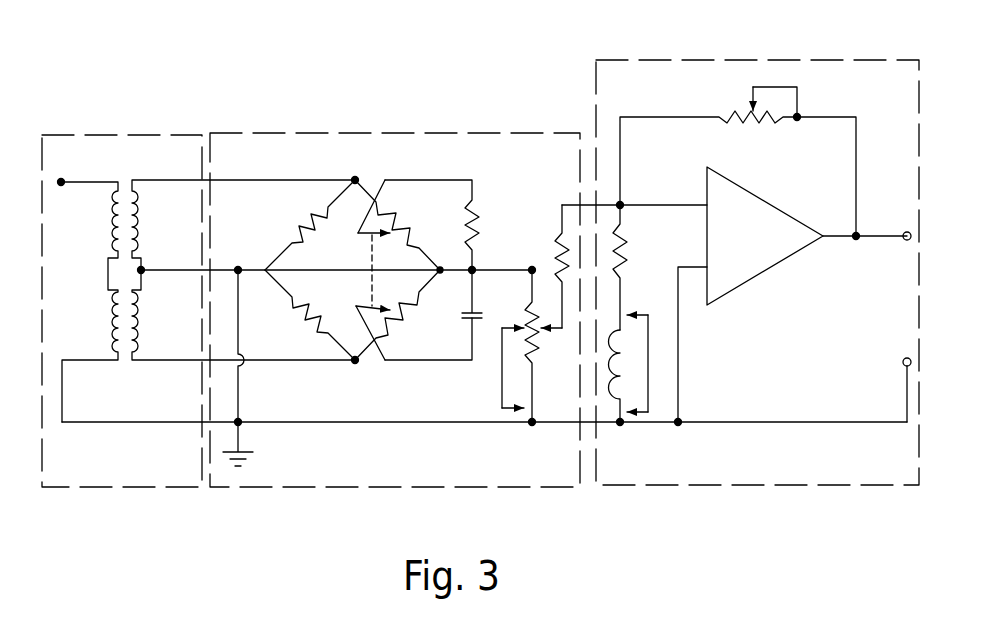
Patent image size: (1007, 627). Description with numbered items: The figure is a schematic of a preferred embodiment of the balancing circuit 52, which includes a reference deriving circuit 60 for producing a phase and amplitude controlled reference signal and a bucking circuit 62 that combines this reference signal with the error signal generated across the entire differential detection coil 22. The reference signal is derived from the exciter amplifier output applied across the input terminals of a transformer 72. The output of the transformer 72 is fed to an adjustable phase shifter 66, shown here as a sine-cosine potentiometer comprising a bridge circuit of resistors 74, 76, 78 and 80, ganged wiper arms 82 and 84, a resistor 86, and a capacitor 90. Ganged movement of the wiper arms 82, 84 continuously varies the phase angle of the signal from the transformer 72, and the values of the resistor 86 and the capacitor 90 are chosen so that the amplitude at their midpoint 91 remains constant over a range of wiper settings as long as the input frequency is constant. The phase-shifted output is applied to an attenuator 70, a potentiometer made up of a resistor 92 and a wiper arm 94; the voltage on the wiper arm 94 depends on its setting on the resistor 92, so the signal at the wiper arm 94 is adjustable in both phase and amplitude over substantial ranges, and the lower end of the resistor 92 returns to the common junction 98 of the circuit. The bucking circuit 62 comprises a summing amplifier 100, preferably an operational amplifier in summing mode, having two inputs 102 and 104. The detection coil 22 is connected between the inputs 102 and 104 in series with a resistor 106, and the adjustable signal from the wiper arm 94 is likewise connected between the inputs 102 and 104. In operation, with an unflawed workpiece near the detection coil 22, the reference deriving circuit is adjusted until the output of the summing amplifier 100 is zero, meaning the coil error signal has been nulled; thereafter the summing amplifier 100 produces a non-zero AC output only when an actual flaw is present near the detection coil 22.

The transformer 72 is at (125, 193).
The reference deriving circuit 60 is at (277, 130).
The resistor 74 is at (314, 212).
The resistor 78 is at (316, 320).
The resistor 76 is at (400, 230).
The resistor 80 is at (402, 317).
The adjustable phase shifter 66 is at (350, 239).
The ganged wiper arm 82 is at (370, 238).
The ganged wiper arm 84 is at (380, 312).
The resistor 86 is at (483, 195).
The capacitor 90 is at (466, 322).
The midpoint 91 is at (468, 273).
The resistor 92 is at (538, 353).
The attenuator 70 is at (522, 304).
The wiper arm 94 is at (553, 300).
The junction 98 is at (533, 423).
The balancing circuit 52 is at (757, 245).
The bucking circuit 62 is at (747, 58).
The input 102 is at (638, 205).
The resistor 106 is at (627, 247).
The differential detection coil 22 is at (617, 365).
The input 104 is at (696, 264).
The summing amplifier 100 is at (770, 270).